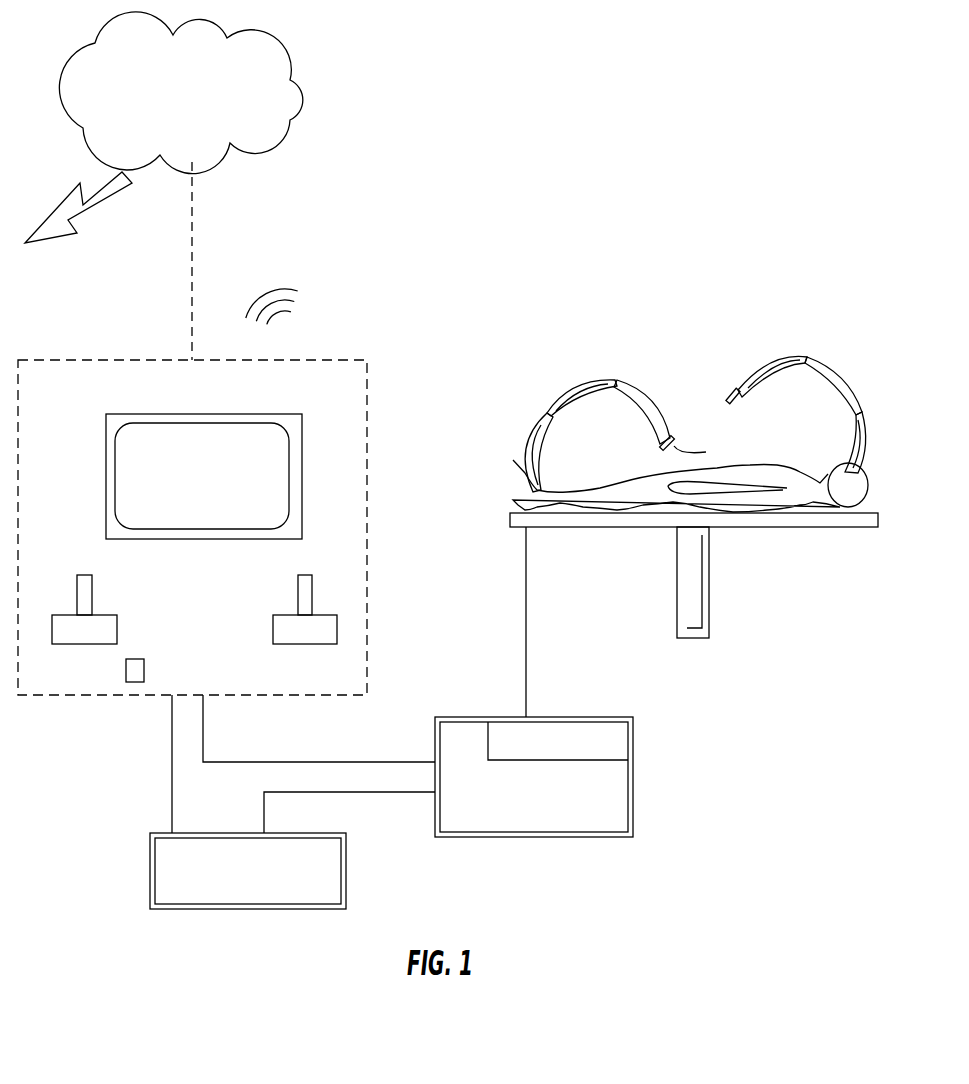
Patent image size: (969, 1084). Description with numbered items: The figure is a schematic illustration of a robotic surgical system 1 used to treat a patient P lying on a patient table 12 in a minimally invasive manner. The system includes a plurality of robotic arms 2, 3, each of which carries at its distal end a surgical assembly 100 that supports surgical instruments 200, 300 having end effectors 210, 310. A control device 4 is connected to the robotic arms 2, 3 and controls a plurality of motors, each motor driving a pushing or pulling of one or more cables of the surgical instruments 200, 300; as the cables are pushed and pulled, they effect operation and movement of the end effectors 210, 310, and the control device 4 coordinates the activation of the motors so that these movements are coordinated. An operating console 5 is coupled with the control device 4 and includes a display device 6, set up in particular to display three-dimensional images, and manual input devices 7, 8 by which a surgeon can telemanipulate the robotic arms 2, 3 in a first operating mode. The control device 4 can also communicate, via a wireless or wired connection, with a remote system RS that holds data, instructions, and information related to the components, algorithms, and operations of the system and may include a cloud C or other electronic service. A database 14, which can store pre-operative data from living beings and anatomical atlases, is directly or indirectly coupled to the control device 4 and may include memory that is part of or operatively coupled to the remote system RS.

The robotic surgical system 1 is at (770, 753).
The robotic arm 2 is at (528, 368).
The robotic arm 3 is at (847, 393).
The control device 4 is at (533, 808).
The operating console 5 is at (192, 472).
The display device 6 is at (210, 483).
The manual input device 7 is at (90, 635).
The manual input device 8 is at (312, 635).
The patient table 12 is at (618, 520).
The database 14 is at (260, 885).
The surgical assembly 100 is at (706, 381).
The surgical instrument 200 is at (677, 440).
The end effector 210 is at (706, 453).
The surgical instrument 300 is at (729, 398).
The end effector 310 is at (723, 398).
The cloud C is at (275, 52).
The remote system RS is at (258, 263).
The patient P is at (752, 500).